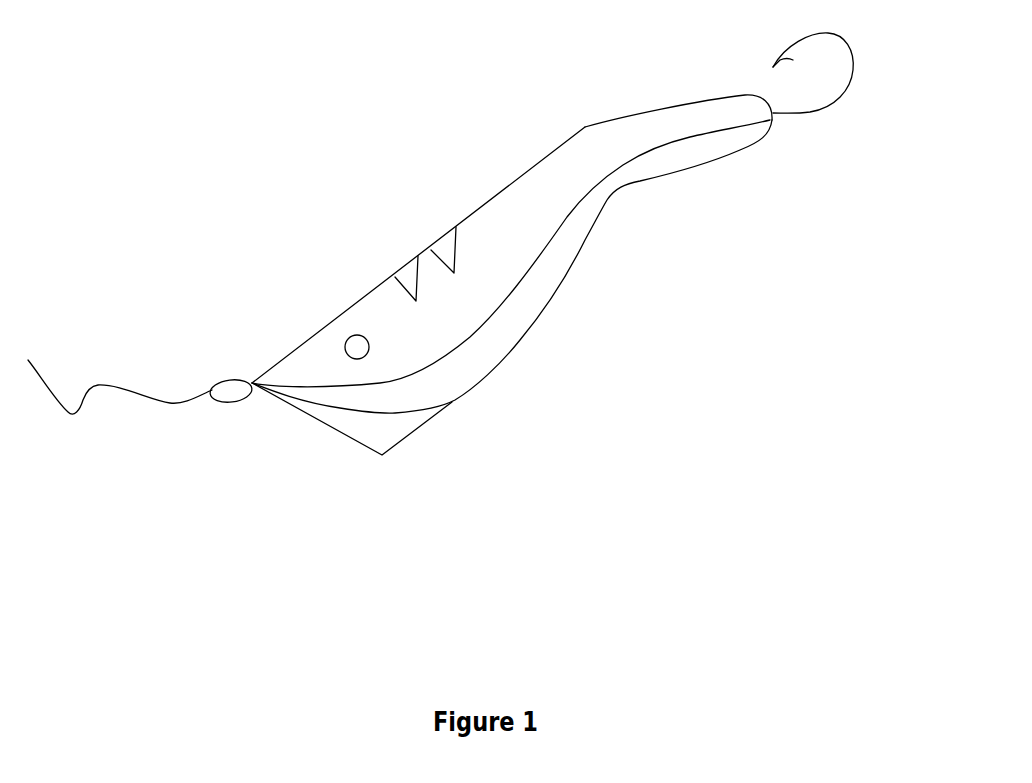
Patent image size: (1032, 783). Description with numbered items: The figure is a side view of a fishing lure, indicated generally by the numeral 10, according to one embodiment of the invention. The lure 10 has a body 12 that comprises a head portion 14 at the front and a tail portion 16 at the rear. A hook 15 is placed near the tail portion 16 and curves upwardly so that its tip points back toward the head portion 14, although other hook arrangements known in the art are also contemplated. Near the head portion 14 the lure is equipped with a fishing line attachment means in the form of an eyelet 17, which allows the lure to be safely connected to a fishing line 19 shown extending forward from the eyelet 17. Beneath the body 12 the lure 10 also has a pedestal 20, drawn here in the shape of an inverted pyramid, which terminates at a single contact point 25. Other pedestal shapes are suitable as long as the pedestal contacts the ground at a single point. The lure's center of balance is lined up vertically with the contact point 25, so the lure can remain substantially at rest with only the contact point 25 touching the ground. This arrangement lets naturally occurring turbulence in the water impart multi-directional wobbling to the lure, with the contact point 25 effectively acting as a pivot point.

The lure 10 is at (402, 193).
The body 12 is at (502, 193).
The head portion 14 is at (343, 313).
The tail portion 16 is at (672, 122).
The hook 15 is at (852, 53).
The eyelet 17 is at (222, 403).
The fishing line 19 is at (98, 385).
The pedestal 20 is at (410, 423).
The contact point 25 is at (382, 455).